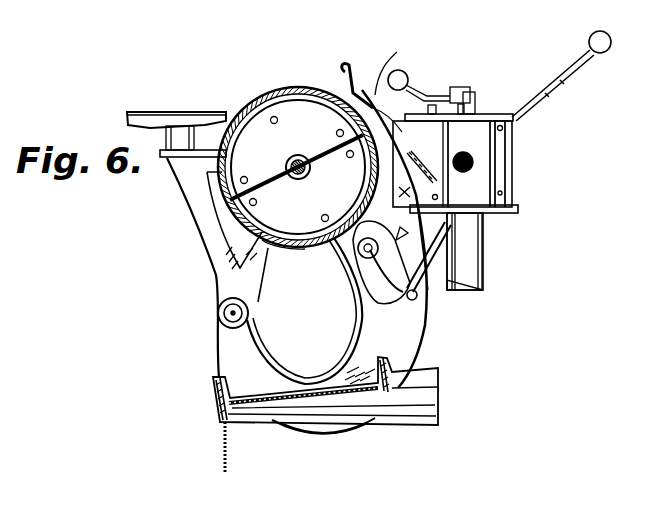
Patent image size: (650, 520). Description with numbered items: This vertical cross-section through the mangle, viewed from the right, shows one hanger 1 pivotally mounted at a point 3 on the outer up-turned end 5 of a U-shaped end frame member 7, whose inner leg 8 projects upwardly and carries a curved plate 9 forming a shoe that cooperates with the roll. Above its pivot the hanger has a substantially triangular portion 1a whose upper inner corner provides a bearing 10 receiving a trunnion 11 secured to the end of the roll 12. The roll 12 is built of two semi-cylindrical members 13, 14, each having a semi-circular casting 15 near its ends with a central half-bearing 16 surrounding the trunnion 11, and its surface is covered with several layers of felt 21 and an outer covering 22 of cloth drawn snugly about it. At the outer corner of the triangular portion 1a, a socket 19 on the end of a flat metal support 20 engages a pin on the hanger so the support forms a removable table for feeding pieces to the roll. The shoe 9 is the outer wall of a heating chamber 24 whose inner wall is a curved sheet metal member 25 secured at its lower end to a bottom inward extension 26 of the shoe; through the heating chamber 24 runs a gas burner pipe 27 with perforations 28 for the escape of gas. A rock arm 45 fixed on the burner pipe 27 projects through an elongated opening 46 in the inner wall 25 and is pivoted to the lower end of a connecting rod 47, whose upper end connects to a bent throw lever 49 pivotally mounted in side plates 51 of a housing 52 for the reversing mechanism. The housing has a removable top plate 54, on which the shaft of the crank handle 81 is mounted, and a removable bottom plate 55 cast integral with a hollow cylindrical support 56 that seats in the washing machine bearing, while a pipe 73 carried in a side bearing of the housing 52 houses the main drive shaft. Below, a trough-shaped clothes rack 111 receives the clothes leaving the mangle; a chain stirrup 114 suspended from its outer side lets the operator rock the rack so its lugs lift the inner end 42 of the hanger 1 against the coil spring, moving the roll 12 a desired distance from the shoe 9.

The hanger 1 is at (213, 227).
The triangular portion 1a is at (203, 170).
The pivot point 3 is at (219, 310).
The outer up-turned end 5 is at (221, 318).
The U-shaped end frame member 7 is at (263, 367).
The inner leg 8 is at (427, 308).
The shoe 9 is at (352, 95).
The bearing 10 is at (469, 164).
The trunnion 11 is at (296, 178).
The roll 12 is at (298, 90).
The semi-cylindrical member 13 is at (250, 105).
The semi-cylindrical member 14 is at (290, 250).
The semi-circular casting 15 is at (325, 169).
The central half-bearing 16 is at (286, 169).
The socket 19 is at (172, 142).
The flat metal support 20 is at (185, 112).
The felt 21 is at (280, 92).
The outer covering 22 is at (262, 97).
The heating chamber 24 is at (418, 161).
The curved sheet metal member 25 is at (412, 63).
The bottom inward extension 26 is at (360, 307).
The gas burner pipe 27 is at (483, 250).
The perforations 28 is at (372, 243).
The inner end 42 is at (438, 380).
The rock arm 45 is at (457, 284).
The elongated opening 46 is at (450, 267).
The connecting rod 47 is at (497, 213).
The bent throw lever 49 is at (563, 78).
The side plates 51 is at (497, 167).
The housing 52 is at (500, 183).
The top plate 54 is at (481, 113).
The bottom plate 55 is at (513, 203).
The hollow cylindrical support 56 is at (488, 238).
The pipe 73 is at (472, 158).
The crank handle 81 is at (437, 88).
The clothes rack 111 is at (272, 423).
The chain stirrup 114 is at (223, 460).